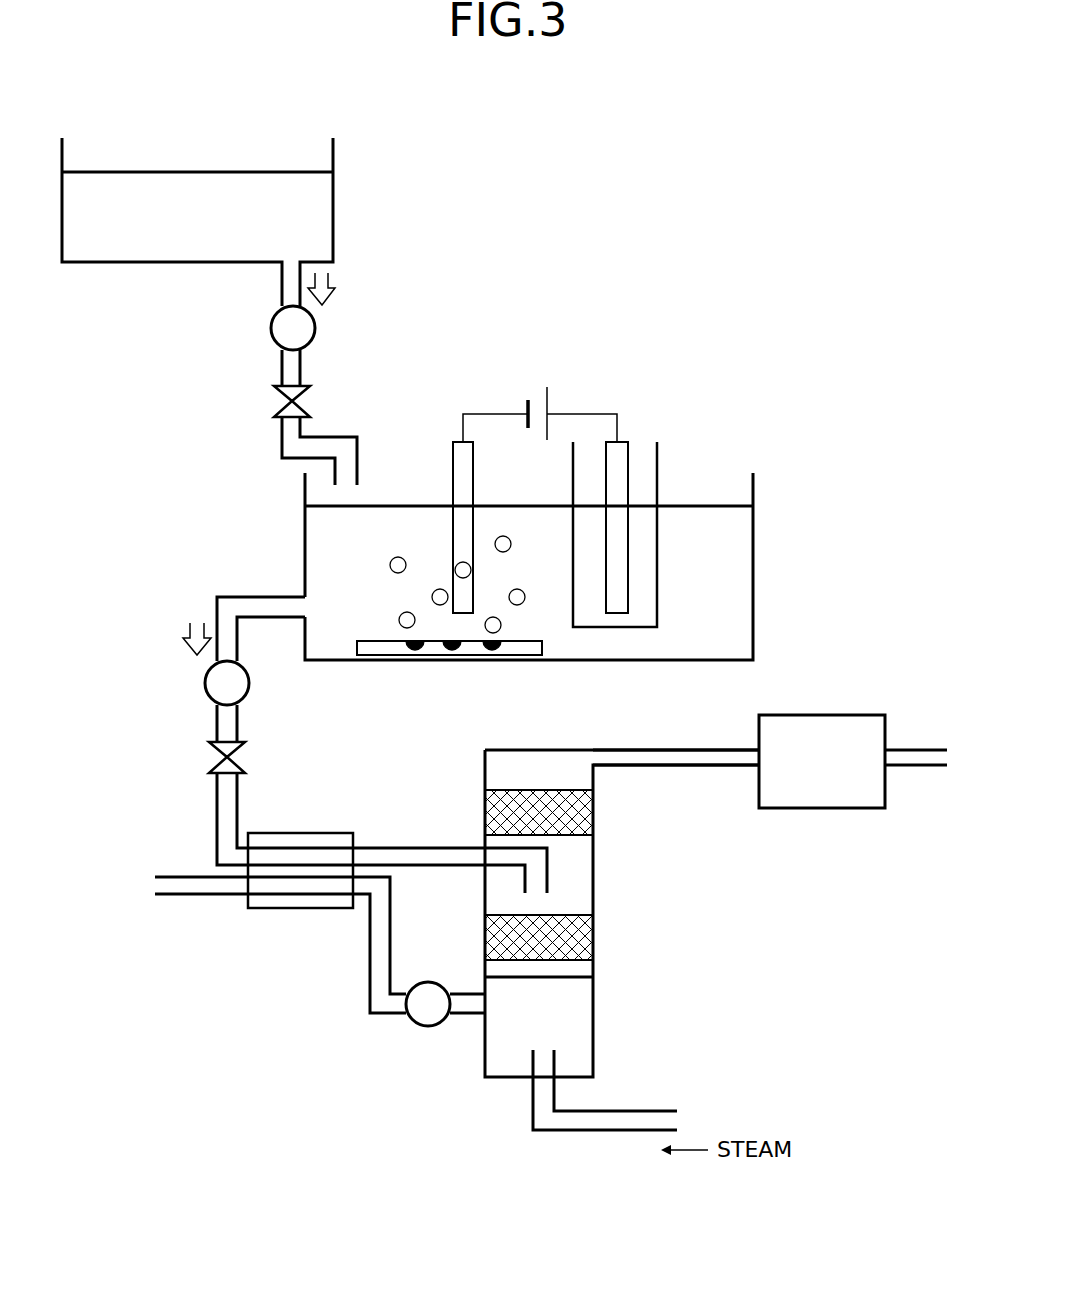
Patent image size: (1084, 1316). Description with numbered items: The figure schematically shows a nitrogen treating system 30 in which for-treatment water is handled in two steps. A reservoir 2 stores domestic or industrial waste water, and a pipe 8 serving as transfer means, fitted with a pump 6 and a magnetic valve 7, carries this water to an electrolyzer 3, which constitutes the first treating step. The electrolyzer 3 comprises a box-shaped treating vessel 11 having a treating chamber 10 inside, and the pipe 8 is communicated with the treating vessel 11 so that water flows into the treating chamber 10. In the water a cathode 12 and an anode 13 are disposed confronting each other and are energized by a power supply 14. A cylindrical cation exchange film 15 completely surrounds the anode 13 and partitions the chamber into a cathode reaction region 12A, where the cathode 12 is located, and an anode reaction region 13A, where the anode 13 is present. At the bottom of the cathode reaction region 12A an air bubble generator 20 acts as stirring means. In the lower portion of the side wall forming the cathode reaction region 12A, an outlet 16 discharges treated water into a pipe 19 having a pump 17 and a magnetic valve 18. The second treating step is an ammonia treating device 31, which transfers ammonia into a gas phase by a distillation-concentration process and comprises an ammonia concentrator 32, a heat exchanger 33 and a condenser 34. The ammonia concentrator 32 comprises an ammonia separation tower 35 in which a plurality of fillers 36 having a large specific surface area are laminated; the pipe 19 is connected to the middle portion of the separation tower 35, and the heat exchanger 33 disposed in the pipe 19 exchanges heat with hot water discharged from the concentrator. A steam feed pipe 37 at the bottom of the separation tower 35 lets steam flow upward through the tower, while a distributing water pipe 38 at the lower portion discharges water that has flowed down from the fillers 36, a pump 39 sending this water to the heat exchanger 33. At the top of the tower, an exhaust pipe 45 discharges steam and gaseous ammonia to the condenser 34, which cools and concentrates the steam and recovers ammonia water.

The reservoir 2 is at (335, 188).
The electrolyzer 3 is at (706, 468).
The pump 6 is at (270, 318).
The magnetic valve 7 is at (278, 400).
The pipe 8 is at (283, 446).
The treating chamber 10 is at (708, 573).
The treating vessel 11 is at (756, 565).
The cathode 12 is at (460, 452).
The cathode reaction region 12A is at (341, 529).
The anode 13 is at (617, 448).
The anode reaction region 13A is at (648, 538).
The power supply 14 is at (548, 400).
The cation exchange film 15 is at (659, 460).
The outlet 16 is at (303, 620).
The pump 17 is at (205, 681).
The magnetic valve 18 is at (215, 765).
The pipe 19 is at (237, 803).
The air bubble generator 20 is at (375, 648).
The nitrogen treating system 30 is at (715, 318).
The ammonia treating device 31 is at (322, 1036).
The ammonia concentrator 32 is at (594, 1000).
The heat exchanger 33 is at (285, 910).
The condenser 34 is at (818, 810).
The ammonia separation tower 35 is at (510, 1078).
The fillers 36 is at (582, 931).
The steam feed pipe 37 is at (578, 1132).
The distributing water pipe 38 is at (382, 1015).
The pump 39 is at (428, 982).
The exhaust pipe 45 is at (698, 768).